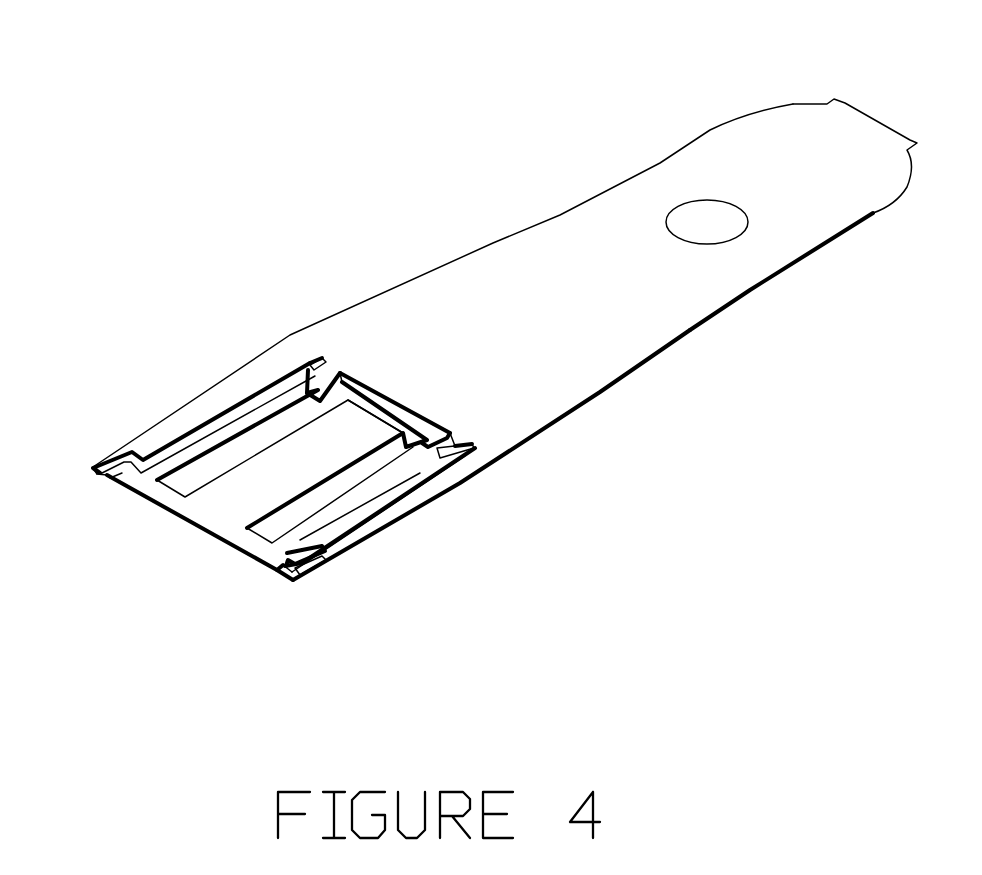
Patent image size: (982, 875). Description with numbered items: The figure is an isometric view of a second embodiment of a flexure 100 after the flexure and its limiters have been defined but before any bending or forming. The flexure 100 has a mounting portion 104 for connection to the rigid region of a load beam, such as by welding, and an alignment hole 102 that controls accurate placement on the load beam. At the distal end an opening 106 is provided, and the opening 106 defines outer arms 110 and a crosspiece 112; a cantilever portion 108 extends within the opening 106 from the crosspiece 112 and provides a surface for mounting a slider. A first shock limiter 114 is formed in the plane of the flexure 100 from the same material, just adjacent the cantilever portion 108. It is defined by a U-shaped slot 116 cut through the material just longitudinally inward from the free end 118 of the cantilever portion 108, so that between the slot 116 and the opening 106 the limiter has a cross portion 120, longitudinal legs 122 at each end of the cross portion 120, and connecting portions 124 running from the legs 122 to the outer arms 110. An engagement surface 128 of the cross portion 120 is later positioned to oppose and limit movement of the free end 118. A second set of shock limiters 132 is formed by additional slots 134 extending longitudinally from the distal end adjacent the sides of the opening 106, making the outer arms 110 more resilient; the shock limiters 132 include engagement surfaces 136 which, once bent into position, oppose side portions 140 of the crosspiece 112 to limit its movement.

The flexure 100 is at (443, 285).
The alignment hole 102 is at (710, 130).
The mounting portion 104 is at (803, 214).
The opening 106 is at (269, 519).
The cantilever portion 108 is at (280, 382).
The outer arms 110 is at (282, 472).
The crosspiece 112 is at (192, 531).
The first shock limiter 114 is at (360, 349).
The U-shaped slot 116 is at (544, 455).
The free end 118 is at (395, 321).
The cross portion 120 is at (411, 359).
The longitudinal legs 122 is at (429, 389).
The connecting portions 124 is at (389, 437).
The engagement surface 128 is at (467, 395).
The second shock limiters 132 is at (185, 551).
The additional slots 134 is at (263, 499).
The engagement surfaces 136 is at (161, 569).
The side portions 140 is at (178, 549).